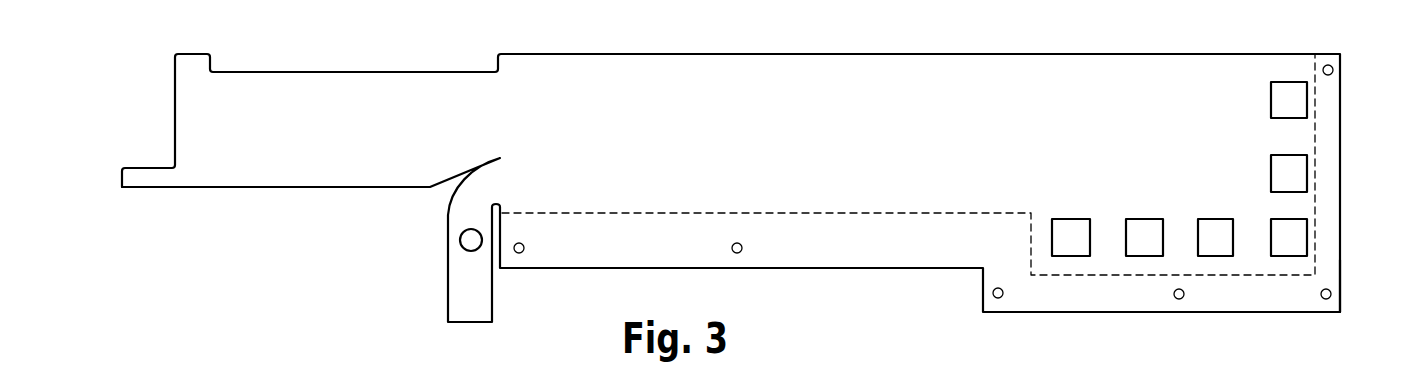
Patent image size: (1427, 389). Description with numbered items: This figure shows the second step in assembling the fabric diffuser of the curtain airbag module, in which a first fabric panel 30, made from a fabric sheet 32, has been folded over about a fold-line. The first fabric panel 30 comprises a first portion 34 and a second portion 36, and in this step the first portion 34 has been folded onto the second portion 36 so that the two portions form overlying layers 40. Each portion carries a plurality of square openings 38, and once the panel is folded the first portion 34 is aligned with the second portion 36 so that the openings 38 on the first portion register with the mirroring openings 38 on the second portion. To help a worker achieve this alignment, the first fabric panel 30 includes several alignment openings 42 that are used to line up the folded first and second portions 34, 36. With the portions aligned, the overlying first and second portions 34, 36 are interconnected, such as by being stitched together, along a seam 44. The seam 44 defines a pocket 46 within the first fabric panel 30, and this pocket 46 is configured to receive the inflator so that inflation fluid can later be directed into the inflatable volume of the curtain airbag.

The first fabric panel 30 is at (265, 97).
The fabric sheet 32 is at (327, 90).
The first portion 34 is at (1233, 78).
The second portion 36 is at (1341, 278).
The openings 38 is at (1062, 257).
The overlying layers 40 is at (850, 90).
The alignment openings 42 is at (521, 253).
The seam 44 is at (823, 214).
The pocket 46 is at (700, 85).